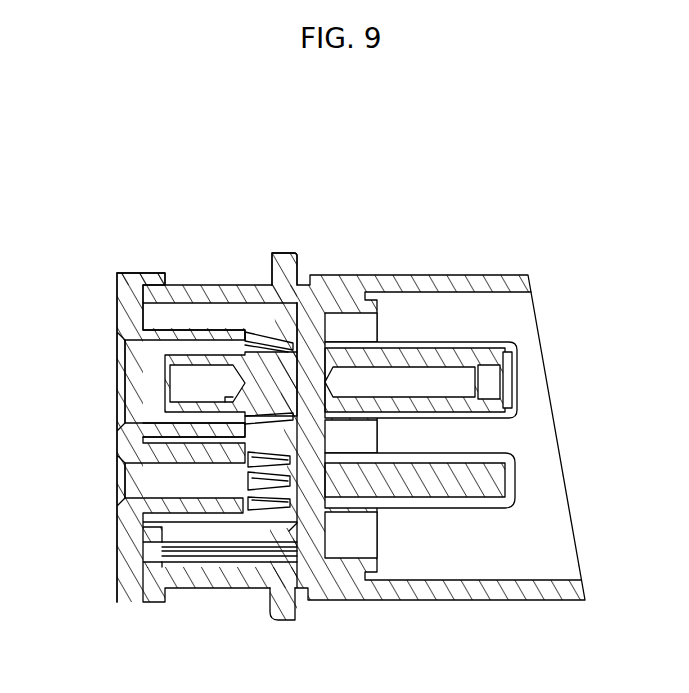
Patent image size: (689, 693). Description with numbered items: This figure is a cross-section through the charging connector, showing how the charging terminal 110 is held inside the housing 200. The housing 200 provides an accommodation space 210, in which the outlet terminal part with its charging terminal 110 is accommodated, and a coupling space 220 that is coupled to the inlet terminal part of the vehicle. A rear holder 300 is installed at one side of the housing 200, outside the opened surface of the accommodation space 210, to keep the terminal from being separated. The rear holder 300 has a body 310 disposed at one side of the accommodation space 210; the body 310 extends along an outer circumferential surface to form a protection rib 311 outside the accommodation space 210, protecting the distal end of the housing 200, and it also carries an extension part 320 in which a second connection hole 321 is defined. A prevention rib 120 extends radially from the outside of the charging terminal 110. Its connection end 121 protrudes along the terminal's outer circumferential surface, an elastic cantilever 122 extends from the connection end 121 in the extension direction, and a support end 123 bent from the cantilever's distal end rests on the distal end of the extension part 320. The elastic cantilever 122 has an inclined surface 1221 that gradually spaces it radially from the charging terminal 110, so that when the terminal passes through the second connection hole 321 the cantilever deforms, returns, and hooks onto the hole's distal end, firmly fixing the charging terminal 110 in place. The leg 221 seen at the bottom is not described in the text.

The rear holder 300 is at (115, 262).
The body 310 is at (127, 301).
The protection rib 311 is at (145, 278).
The extension part 320 is at (198, 333).
The second connection hole 321 is at (140, 396).
The housing 200 is at (318, 441).
The accommodation space 210 is at (480, 556).
The charging terminal 110 is at (432, 360).
The prevention rib 120 is at (290, 342).
The connection end 121 is at (298, 345).
The elastic cantilever 122 is at (278, 345).
The support end 123 is at (268, 345).
The inclined surface 1221 is at (302, 318).
The coupling space 220 is at (239, 600).
The contact leg 221 is at (292, 524).